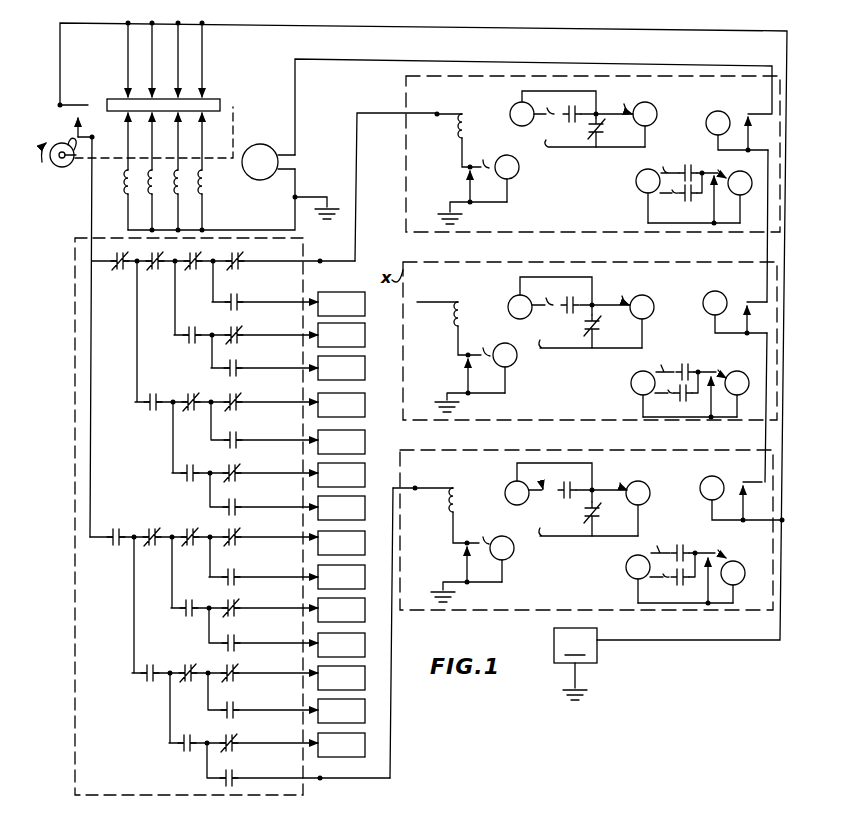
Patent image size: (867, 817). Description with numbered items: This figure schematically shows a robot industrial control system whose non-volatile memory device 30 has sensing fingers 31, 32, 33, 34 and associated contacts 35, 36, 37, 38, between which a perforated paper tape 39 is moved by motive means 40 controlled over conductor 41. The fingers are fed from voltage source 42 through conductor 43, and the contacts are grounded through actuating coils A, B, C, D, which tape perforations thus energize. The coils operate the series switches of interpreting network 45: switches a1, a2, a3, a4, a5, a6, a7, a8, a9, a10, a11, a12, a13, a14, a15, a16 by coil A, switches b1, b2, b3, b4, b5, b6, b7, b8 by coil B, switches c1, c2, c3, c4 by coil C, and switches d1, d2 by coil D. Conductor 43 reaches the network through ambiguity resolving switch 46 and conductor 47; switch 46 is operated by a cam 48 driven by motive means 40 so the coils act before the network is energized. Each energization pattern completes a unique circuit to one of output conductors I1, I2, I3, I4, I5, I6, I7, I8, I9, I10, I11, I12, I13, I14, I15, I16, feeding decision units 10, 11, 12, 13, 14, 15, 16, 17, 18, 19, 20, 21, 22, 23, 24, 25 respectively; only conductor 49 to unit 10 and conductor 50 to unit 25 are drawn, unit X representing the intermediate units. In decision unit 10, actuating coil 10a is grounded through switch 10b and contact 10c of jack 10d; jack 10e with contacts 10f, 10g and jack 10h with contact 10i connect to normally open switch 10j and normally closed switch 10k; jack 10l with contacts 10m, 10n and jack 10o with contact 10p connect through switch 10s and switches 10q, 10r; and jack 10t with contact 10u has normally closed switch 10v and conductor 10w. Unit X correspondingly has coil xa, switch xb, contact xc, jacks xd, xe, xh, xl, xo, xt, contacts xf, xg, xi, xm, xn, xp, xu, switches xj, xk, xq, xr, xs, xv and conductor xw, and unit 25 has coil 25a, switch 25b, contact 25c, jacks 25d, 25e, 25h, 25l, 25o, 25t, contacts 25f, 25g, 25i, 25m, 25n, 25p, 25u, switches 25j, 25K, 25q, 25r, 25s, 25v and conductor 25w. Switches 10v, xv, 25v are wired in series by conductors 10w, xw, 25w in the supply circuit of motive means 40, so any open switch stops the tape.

The decision unit 10 is at (406, 103).
The electromagnetic actuating coil 10a is at (454, 136).
The normally closed switch 10b is at (468, 189).
The contact 10c is at (490, 163).
The jack 10d is at (518, 170).
The jack 10e is at (511, 112).
The contact 10f is at (547, 117).
The contact 10g is at (548, 148).
The jack 10h is at (657, 113).
The contact 10i is at (625, 100).
The normally open switch 10j is at (572, 121).
The normally closed switch 10k is at (603, 127).
The jack 10l is at (634, 178).
The contact 10m is at (671, 171).
The contact 10n is at (660, 197).
The jack 10o is at (746, 179).
The contact 10p is at (725, 166).
The normally open switch 10q is at (690, 167).
The normally closed switch 10r is at (690, 203).
The normally closed switch 10s is at (728, 199).
The jack 10t is at (716, 114).
The contact 10u is at (746, 104).
The normally closed switch 10v is at (763, 133).
The conductor 10w is at (767, 247).
The decision unit 11 is at (341, 304).
The decision unit 12 is at (341, 335).
The decision unit 13 is at (341, 368).
The decision unit 14 is at (341, 405).
The decision unit 15 is at (341, 442).
The decision unit 16 is at (341, 475).
The decision unit 17 is at (341, 508).
The decision unit 18 is at (341, 543).
The decision unit 19 is at (341, 577).
The decision unit 20 is at (341, 610).
The decision unit 21 is at (341, 645).
The decision unit 22 is at (341, 678).
The decision unit 23 is at (341, 711).
The decision unit 24 is at (341, 745).
The decision unit 25 is at (440, 452).
The electromagnetic actuating coil 25a is at (446, 516).
The normally closed switch 25b is at (464, 567).
The contact 25c is at (483, 537).
The jack 25d is at (509, 558).
The jack 25e is at (508, 490).
The contact 25f is at (535, 477).
The contact 25g is at (585, 526).
The jack 25h is at (650, 482).
The contact 25i is at (614, 479).
The normally open switch 25j is at (570, 483).
The normally closed switch 25K is at (597, 519).
The jack 25l is at (626, 566).
The contact 25m is at (653, 542).
The contact 25n is at (650, 581).
The jack 25o is at (742, 582).
The contact 25p is at (717, 547).
The normally open switch 25q is at (680, 546).
The normally closed switch 25r is at (684, 583).
The normally closed switch 25s is at (722, 580).
The jack 25t is at (705, 484).
The contact 25u is at (742, 483).
The normally closed switch 25v is at (747, 514).
The conductor 25w is at (758, 523).
The non-volatile memory device 30 is at (239, 106).
The sensing finger 31 is at (203, 92).
The sensing finger 32 is at (179, 92).
The sensing finger 33 is at (153, 92).
The sensing finger 34 is at (128, 92).
The contact 35 is at (205, 150).
The contact 36 is at (180, 150).
The contact 37 is at (154, 150).
The contact 38 is at (129, 150).
The perforated paper tape 39 is at (112, 99).
The motive means 40 is at (268, 152).
The conductor 41 is at (296, 88).
The voltage source 42 is at (575, 664).
The conductor 43 is at (392, 32).
The interpreting network 45 is at (74, 526).
The ambiguity resolving switch 46 is at (75, 113).
The conductor 47 is at (91, 209).
The cam 48 is at (58, 168).
The conductor 49 is at (356, 156).
The conductor 50 is at (401, 697).
The actuating coil A is at (203, 205).
The actuating coil B is at (179, 205).
The actuating coil C is at (153, 205).
The actuating coil D is at (129, 205).
The series switch a1 is at (240, 256).
The series switch a2 is at (239, 297).
The series switch a3 is at (239, 330).
The series switch a4 is at (238, 363).
The series switch a5 is at (238, 397).
The series switch a6 is at (238, 435).
The series switch a7 is at (237, 468).
The series switch a8 is at (237, 502).
The series switch a9 is at (237, 532).
The series switch a10 is at (236, 572).
The series switch a11 is at (236, 603).
The series switch a12 is at (236, 638).
The series switch a13 is at (235, 668).
The series switch a14 is at (235, 705).
The series switch a15 is at (234, 738).
The series switch a16 is at (234, 773).
The series switch b1 is at (192, 272).
The series switch b2 is at (191, 343).
The series switch b3 is at (191, 410).
The series switch b4 is at (190, 481).
The series switch b5 is at (190, 545).
The series switch b6 is at (189, 616).
The series switch b7 is at (188, 681).
The series switch b8 is at (187, 751).
The series switch c1 is at (154, 272).
The series switch c2 is at (152, 410).
The series switch c3 is at (151, 545).
The series switch c4 is at (149, 681).
The series switch d1 is at (119, 272).
The series switch d2 is at (115, 545).
The output conductor I1 is at (272, 263).
The output conductor I2 is at (271, 304).
The output conductor I3 is at (271, 337).
The output conductor I4 is at (270, 370).
The output conductor I5 is at (270, 404).
The output conductor I6 is at (270, 442).
The output conductor I7 is at (269, 475).
The output conductor I8 is at (269, 509).
The output conductor I9 is at (269, 539).
The output conductor I10 is at (268, 579).
The output conductor I11 is at (268, 610).
The output conductor I12 is at (268, 645).
The output conductor I13 is at (267, 675).
The output conductor I14 is at (267, 712).
The output conductor I15 is at (266, 745).
The output conductor I16 is at (266, 780).
The electromagnetic actuating coil xa is at (452, 315).
The normally closed switch xb is at (466, 378).
The contact xc is at (484, 348).
The jack xd is at (511, 368).
The jack xe is at (507, 302).
The contact xf is at (544, 300).
The contact xg is at (544, 352).
The jack xh is at (650, 298).
The contact xi is at (616, 292).
The normally open switch xj is at (568, 298).
The normally closed switch xk is at (583, 328).
The jack xl is at (631, 374).
The contact xm is at (656, 361).
The contact xn is at (658, 396).
The jack xo is at (743, 379).
The contact xp is at (719, 366).
The normally open switch xq is at (683, 365).
The normally closed switch xr is at (690, 399).
The normally closed switch xs is at (721, 397).
The jack xt is at (706, 297).
The contact xu is at (742, 300).
The normally closed switch xv is at (744, 323).
The conductor xw is at (764, 438).